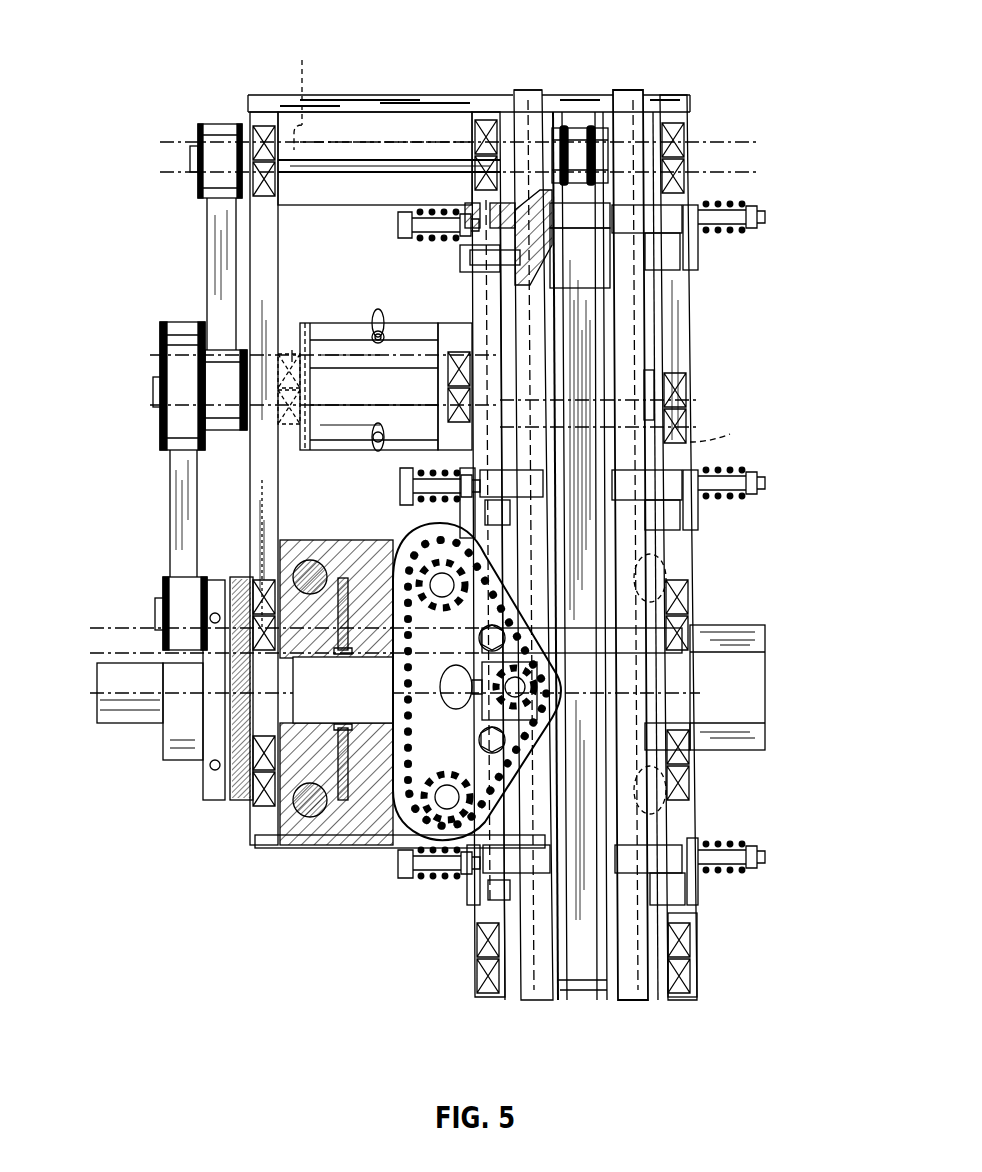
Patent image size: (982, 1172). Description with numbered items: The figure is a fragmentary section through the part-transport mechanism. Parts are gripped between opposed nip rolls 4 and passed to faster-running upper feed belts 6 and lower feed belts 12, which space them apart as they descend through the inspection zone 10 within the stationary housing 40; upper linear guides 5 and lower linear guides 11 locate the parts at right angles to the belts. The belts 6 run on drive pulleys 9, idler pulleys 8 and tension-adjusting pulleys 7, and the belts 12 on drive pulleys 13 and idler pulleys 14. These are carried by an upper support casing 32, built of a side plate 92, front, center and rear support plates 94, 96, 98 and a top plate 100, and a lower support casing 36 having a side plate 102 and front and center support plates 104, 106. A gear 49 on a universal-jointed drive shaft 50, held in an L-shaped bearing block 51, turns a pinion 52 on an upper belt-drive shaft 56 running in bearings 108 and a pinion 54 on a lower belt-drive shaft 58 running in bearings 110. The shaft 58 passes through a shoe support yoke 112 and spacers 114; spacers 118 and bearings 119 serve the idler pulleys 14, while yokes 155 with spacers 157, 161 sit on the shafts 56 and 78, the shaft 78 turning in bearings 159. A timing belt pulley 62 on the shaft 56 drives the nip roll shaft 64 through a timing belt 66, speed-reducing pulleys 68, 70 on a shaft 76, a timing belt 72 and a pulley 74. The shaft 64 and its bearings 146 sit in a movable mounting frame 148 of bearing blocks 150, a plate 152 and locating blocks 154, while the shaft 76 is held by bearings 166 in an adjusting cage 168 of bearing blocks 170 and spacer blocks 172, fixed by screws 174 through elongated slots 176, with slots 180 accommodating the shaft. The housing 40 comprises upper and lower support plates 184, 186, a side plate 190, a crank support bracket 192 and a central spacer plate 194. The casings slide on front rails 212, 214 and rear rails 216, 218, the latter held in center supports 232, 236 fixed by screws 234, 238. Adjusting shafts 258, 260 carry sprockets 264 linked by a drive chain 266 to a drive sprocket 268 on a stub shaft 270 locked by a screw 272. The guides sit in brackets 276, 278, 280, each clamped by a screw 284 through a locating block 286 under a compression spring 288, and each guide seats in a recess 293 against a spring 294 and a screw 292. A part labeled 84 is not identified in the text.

The nip rolls 4 is at (572, 128).
The upper linear guides 5 is at (542, 92).
The upper feed belts 6 is at (590, 362).
The tension-adjusting pulleys 7 is at (660, 282).
The idler pulleys 8 is at (598, 390).
The drive pulleys 9 is at (590, 652).
The inspection zone 10 is at (382, 724).
The lower linear guides 11 is at (525, 1002).
The lower feed belts 12 is at (600, 840).
The drive pulleys 13 is at (645, 727).
The idler pulleys 14 is at (590, 1002).
The upper support casing 32 is at (412, 94).
The lower support casing 36 is at (272, 857).
The stationary housing 40 is at (745, 757).
The gears 49 is at (230, 702).
The universal-jointed drive shafts 50 is at (122, 712).
The L-shaped bearing blocks 51 is at (170, 762).
The pinions 52 is at (238, 579).
The pinions 54 is at (240, 802).
The upper belt-drive shafts 56 is at (155, 617).
The lower belt-drive shafts 58 is at (205, 802).
The timing belt pulleys 62 is at (160, 582).
The nip roll shafts 64 is at (345, 164).
The timing belts 66 is at (169, 502).
The speed-reducing pulley 68 is at (170, 327).
The speed-reducing pulley 70 is at (238, 430).
The timing belts 72 is at (207, 272).
The pulleys 74 is at (200, 128).
The shafts 76 is at (320, 372).
The shafts 78 is at (690, 420).
The shaft 84 is at (660, 308).
The side plate 92 is at (328, 265).
The front support plate 94 is at (686, 360).
The center support plate 96 is at (472, 314).
The rear support plate 98 is at (262, 532).
The top plate 100 is at (318, 94).
The side plate 102 is at (358, 850).
The front support plate 104 is at (697, 977).
The center support plate 106 is at (478, 987).
The bearings 108 is at (690, 592).
The bearings 110 is at (692, 787).
The shoe support yoke 112 is at (630, 1002).
The spacers 114 is at (700, 725).
The spacers 118 is at (480, 1002).
The bearings 119 is at (680, 1002).
The bearings 146 is at (686, 122).
The movable mounting frames 148 is at (338, 207).
The bearing blocks 150 is at (698, 192).
The plate 152 is at (362, 197).
The locating blocks 154 is at (283, 100).
The yokes 155 is at (630, 652).
The spacers 157 is at (665, 652).
The bearings 159 is at (727, 430).
The spacers 161 is at (668, 394).
The bearings 166 is at (290, 452).
The adjusting cage 168 is at (360, 457).
The bearing blocks 170 is at (300, 330).
The spacer blocks 172 is at (399, 380).
The screws 174 is at (382, 334).
The elongated slots 176 is at (345, 315).
The elongated slots 180 is at (292, 320).
The upper support plate 184 is at (720, 627).
The lower support plate 186 is at (768, 737).
The side plate 190 is at (765, 672).
The crank support bracket 192 is at (470, 689).
The central spacer plate 194 is at (343, 690).
The upper rails 212 is at (660, 574).
The lower rails 214 is at (665, 802).
The upper rail 216 is at (330, 545).
The lower rail 218 is at (313, 847).
The center support 232 is at (335, 850).
The screws 234 is at (330, 724).
The center support 236 is at (296, 542).
The screws 238 is at (361, 689).
The adjusting shaft 258 is at (420, 547).
The adjusting shaft 260 is at (435, 882).
The sprocket 264 is at (432, 612).
The drive chain 266 is at (540, 714).
The drive sprocket 268 is at (580, 702).
The stub shaft 270 is at (540, 685).
The screw 272 is at (400, 694).
The brackets 276 is at (614, 240).
The brackets 278 is at (675, 472).
The brackets 280 is at (690, 907).
The screw 284 is at (403, 234).
The locating block 286 is at (457, 248).
The compression springs 288 is at (445, 215).
The screw 292 is at (468, 262).
The mating recesses 293 is at (515, 195).
The compression spring 294 is at (580, 215).